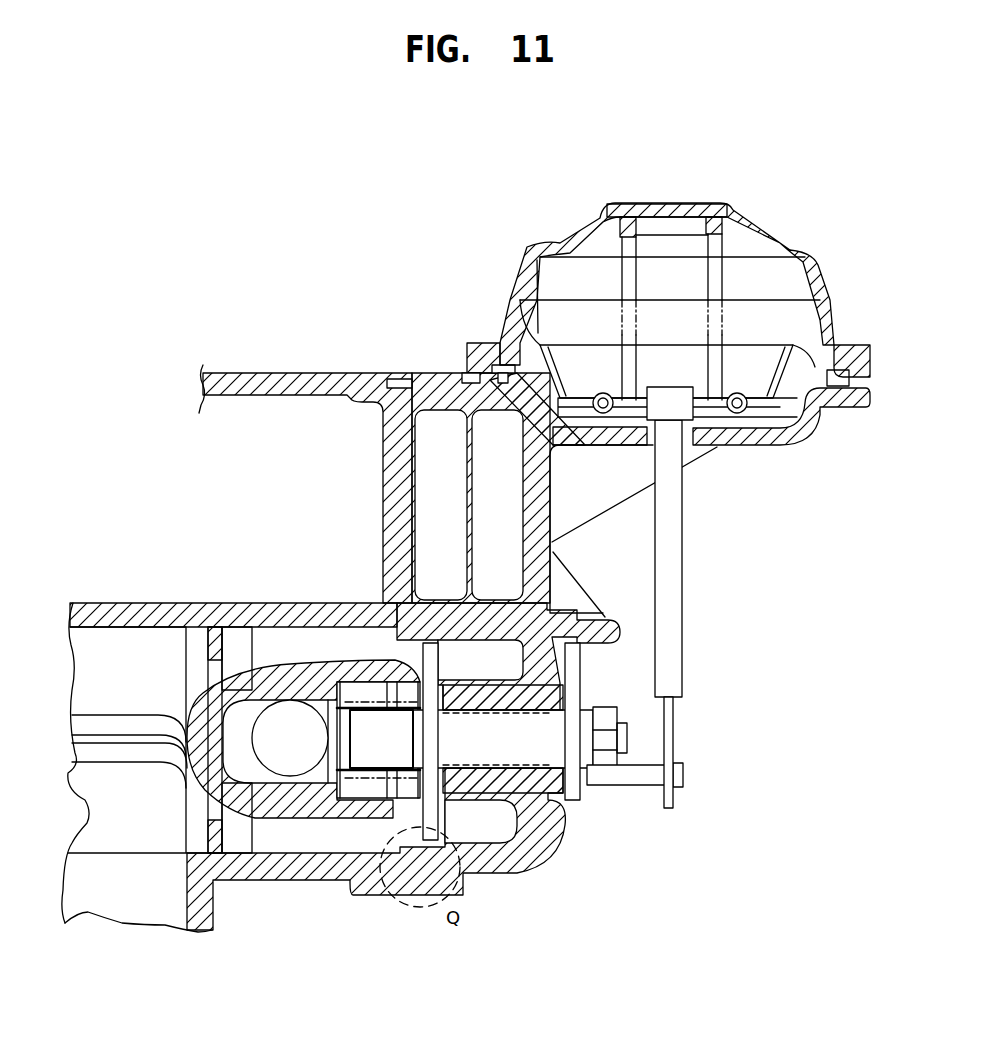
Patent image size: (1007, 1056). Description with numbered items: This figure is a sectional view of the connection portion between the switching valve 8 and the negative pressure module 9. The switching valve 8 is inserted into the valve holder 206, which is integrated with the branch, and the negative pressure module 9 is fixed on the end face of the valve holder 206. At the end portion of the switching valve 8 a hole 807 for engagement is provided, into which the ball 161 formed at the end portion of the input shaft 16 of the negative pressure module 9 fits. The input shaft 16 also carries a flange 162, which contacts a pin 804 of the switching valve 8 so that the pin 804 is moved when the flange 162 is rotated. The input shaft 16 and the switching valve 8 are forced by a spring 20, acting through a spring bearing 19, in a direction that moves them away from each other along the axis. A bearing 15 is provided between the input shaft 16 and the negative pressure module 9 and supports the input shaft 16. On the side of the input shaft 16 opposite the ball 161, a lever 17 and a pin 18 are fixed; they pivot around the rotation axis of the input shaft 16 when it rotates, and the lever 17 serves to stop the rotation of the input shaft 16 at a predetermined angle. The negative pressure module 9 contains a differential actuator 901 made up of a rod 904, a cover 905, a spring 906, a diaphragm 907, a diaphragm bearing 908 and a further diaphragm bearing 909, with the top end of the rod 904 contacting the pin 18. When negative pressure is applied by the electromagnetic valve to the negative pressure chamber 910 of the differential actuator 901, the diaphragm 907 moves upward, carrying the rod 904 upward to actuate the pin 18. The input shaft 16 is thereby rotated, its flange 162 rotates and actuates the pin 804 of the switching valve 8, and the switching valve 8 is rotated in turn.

The switching valve 8 is at (233, 833).
The negative pressure module 9 is at (545, 862).
The bearing 15 is at (557, 787).
The input shaft 16 is at (548, 740).
The lever 17 is at (583, 686).
The pin 18 is at (684, 775).
The spring bearing 19 is at (333, 790).
The spring 20 is at (355, 650).
The ball 161 is at (293, 723).
The flange 162 is at (435, 615).
The valve holder 206 is at (228, 608).
The pin 804 is at (462, 612).
The hole 807 is at (237, 716).
The differential actuator 901 is at (557, 163).
The rod 904 is at (684, 581).
The cover 905 is at (660, 203).
The spring 906 is at (718, 217).
The diaphragm 907 is at (538, 330).
The diaphragm bearing 908 is at (805, 405).
The diaphragm bearing 909 is at (787, 430).
The negative pressure chamber 910 is at (792, 272).